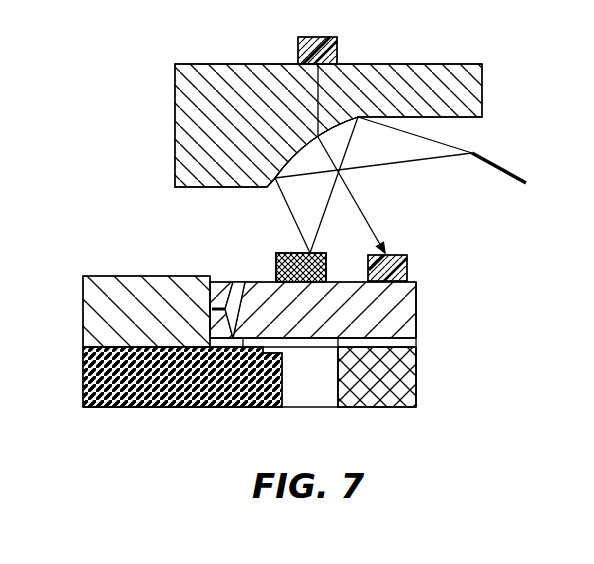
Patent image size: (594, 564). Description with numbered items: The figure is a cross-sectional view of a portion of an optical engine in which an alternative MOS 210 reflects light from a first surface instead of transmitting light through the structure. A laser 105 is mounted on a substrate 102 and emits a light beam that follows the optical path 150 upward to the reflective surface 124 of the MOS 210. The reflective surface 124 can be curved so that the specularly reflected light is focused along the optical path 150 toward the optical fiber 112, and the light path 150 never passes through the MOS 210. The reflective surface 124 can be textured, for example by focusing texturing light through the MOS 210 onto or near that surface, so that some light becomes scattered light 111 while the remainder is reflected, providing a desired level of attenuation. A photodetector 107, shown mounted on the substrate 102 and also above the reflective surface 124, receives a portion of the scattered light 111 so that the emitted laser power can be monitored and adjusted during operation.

The substrate 102 is at (83, 378).
The laser 105 is at (322, 254).
The photodetector 107 is at (298, 39).
The scattered light 111 is at (300, 68).
The optical fiber 112 is at (521, 174).
The reflective surface 124 is at (320, 139).
The optical path 150 is at (284, 198).
The MOS 210 is at (175, 112).